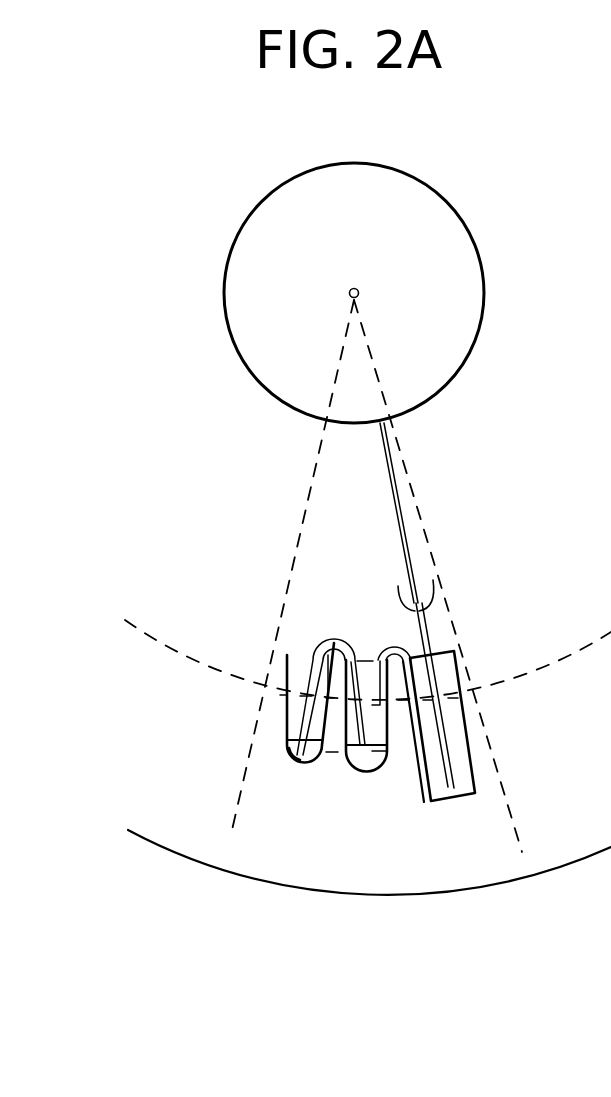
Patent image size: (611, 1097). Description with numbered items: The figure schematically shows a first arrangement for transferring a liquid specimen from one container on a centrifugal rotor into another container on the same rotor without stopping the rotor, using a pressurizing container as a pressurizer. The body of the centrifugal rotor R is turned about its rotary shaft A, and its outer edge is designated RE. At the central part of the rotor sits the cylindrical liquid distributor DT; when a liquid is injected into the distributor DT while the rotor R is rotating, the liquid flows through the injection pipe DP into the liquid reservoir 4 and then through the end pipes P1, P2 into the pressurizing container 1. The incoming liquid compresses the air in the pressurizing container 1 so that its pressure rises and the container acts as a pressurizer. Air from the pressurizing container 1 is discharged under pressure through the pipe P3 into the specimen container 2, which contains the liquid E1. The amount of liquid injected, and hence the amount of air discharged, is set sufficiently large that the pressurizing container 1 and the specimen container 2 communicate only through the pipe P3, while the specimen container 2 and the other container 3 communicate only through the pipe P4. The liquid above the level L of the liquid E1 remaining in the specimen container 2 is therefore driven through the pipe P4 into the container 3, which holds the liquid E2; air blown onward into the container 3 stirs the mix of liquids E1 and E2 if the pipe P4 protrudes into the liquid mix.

The liquid distributor DT is at (250, 373).
The rotary shaft A is at (362, 298).
The centrifugal rotor R is at (385, 519).
The outer edge RE is at (143, 842).
The injection pipe DP is at (400, 489).
The liquid reservoir 4 is at (438, 583).
The pressurizing container 1 is at (482, 743).
The end pipe P1 is at (432, 637).
The end pipe P2 is at (448, 752).
The specimen container 2 is at (373, 725).
The container 3 is at (307, 725).
The pipe P3 is at (393, 643).
The pipe P4 is at (335, 634).
The liquid E1 is at (383, 760).
The liquid E2 is at (288, 752).
The level L is at (332, 757).